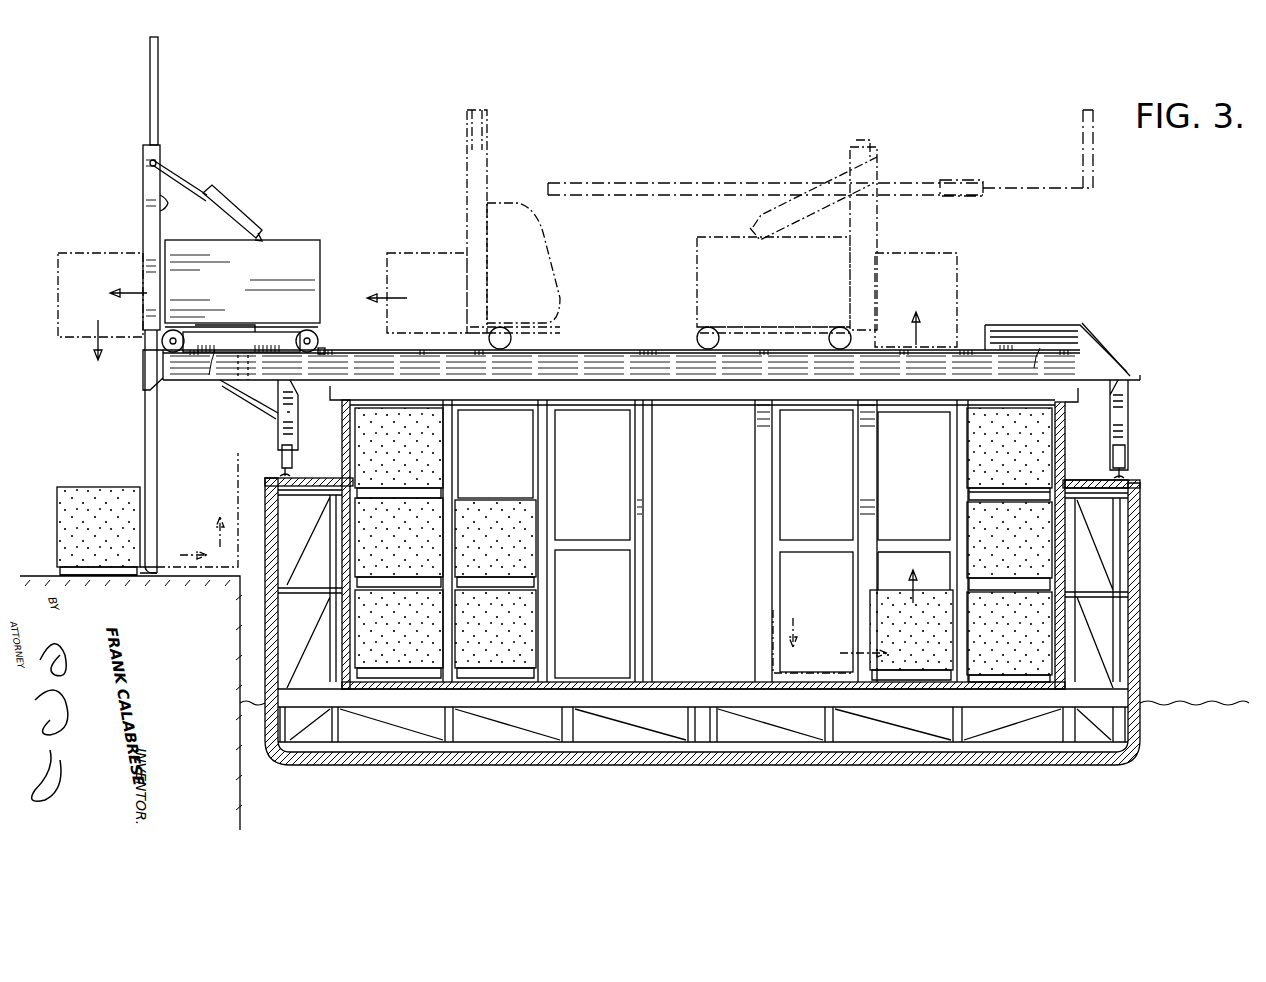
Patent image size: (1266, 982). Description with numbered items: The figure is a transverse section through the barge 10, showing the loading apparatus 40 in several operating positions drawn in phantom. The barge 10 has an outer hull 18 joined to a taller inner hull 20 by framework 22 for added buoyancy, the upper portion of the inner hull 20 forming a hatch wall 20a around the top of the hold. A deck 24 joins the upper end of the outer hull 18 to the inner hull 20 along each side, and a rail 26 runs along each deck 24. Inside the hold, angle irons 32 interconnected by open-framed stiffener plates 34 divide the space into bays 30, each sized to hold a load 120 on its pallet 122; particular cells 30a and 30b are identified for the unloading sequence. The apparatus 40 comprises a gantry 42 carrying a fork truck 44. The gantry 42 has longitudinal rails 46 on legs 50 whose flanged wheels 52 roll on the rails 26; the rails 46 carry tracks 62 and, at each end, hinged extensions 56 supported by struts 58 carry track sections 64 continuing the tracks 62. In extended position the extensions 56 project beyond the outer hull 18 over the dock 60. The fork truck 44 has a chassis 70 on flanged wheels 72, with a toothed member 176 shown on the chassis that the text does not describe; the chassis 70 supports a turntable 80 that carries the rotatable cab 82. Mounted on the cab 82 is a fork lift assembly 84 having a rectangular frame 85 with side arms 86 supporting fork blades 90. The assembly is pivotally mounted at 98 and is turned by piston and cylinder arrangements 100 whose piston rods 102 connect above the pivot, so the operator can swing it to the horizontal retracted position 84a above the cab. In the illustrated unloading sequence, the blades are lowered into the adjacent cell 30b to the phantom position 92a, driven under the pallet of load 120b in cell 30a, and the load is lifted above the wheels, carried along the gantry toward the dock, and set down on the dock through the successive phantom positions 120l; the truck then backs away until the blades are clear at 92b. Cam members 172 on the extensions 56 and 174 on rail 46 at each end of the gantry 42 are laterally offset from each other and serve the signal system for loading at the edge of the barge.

The barge 10 is at (1170, 302).
The outer hull 18 is at (1135, 585).
The inner hull 20 is at (1057, 620).
The hatch wall 20a is at (1063, 460).
The framework 22 is at (1110, 660).
The deck 24 is at (1090, 480).
The rail 26 is at (280, 474).
The bays 30 is at (544, 475).
The hold cell 30a is at (914, 501).
The adjacent cell 30b is at (816, 541).
The angle irons 32 is at (545, 583).
The stiffeners 34 is at (552, 530).
The cargo loading and unloading apparatus 40 is at (328, 305).
The gantry 42 is at (618, 365).
The fork truck 44 is at (304, 247).
The longitudinal rail 46 is at (580, 360).
The legs 50 is at (292, 410).
The flanged wheels 52 is at (283, 448).
The extensions 56 is at (1002, 328).
The struts 58 is at (252, 401).
The dock 60 is at (52, 575).
The tracks 62 is at (1088, 357).
The track sections 64 is at (1038, 347).
The chassis 70 is at (240, 335).
The flanged wheels 72 is at (317, 340).
The turntable 80 is at (212, 330).
The truck cab 82 is at (315, 278).
The fork lift assembly 84 is at (133, 199).
The retracted position of fork lift assembly 84a is at (940, 187).
The rectangular frame 85 is at (139, 454).
The side arm 86 is at (152, 88).
The fork blade 90 is at (148, 576).
The phantom position of fork blades 92a is at (803, 673).
The phantom position of fork blades 92b is at (200, 580).
The pivotal mount 98 is at (165, 195).
The piston and cylinder arrangements 100 is at (252, 218).
The piston rods 102 is at (207, 190).
The loads 120 is at (554, 545).
The load 120b is at (911, 625).
The phantom load positions 120l is at (78, 263).
The pallet 122 is at (115, 576).
The cam member 172 is at (240, 365).
The cam member 174 is at (325, 350).
The rack 176 is at (268, 330).